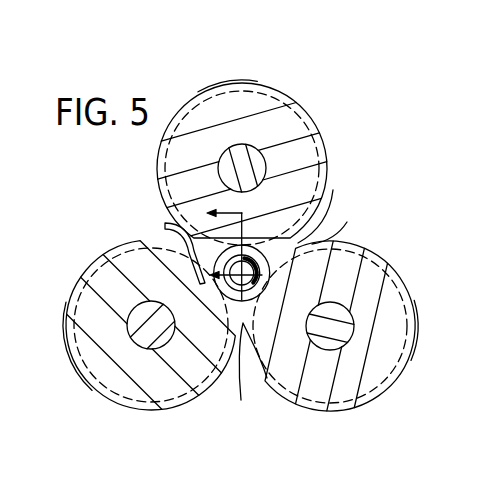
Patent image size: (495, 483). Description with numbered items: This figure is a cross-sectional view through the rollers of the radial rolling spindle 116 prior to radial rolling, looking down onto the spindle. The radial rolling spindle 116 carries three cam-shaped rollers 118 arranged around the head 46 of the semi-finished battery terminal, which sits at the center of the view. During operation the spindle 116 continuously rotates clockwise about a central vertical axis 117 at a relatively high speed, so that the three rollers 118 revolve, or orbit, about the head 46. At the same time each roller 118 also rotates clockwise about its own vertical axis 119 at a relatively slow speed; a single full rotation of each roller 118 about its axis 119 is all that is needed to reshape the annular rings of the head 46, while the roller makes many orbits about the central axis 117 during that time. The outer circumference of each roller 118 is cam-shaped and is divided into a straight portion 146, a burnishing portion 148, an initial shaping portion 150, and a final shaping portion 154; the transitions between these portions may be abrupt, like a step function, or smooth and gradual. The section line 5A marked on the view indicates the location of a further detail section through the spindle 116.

The radial rolling spindle 116 is at (367, 112).
The cam-shaped roller 118 is at (312, 112).
The vertical axis of roller 119 is at (226, 152).
The central vertical axis 117 is at (262, 292).
The straight portion 146 is at (241, 400).
The burnishing portion 148 is at (333, 159).
The initial shaping portion 150 is at (246, 84).
The final shaping portion 154 is at (272, 264).
The head 46 is at (270, 263).
The section line 5A is at (230, 191).